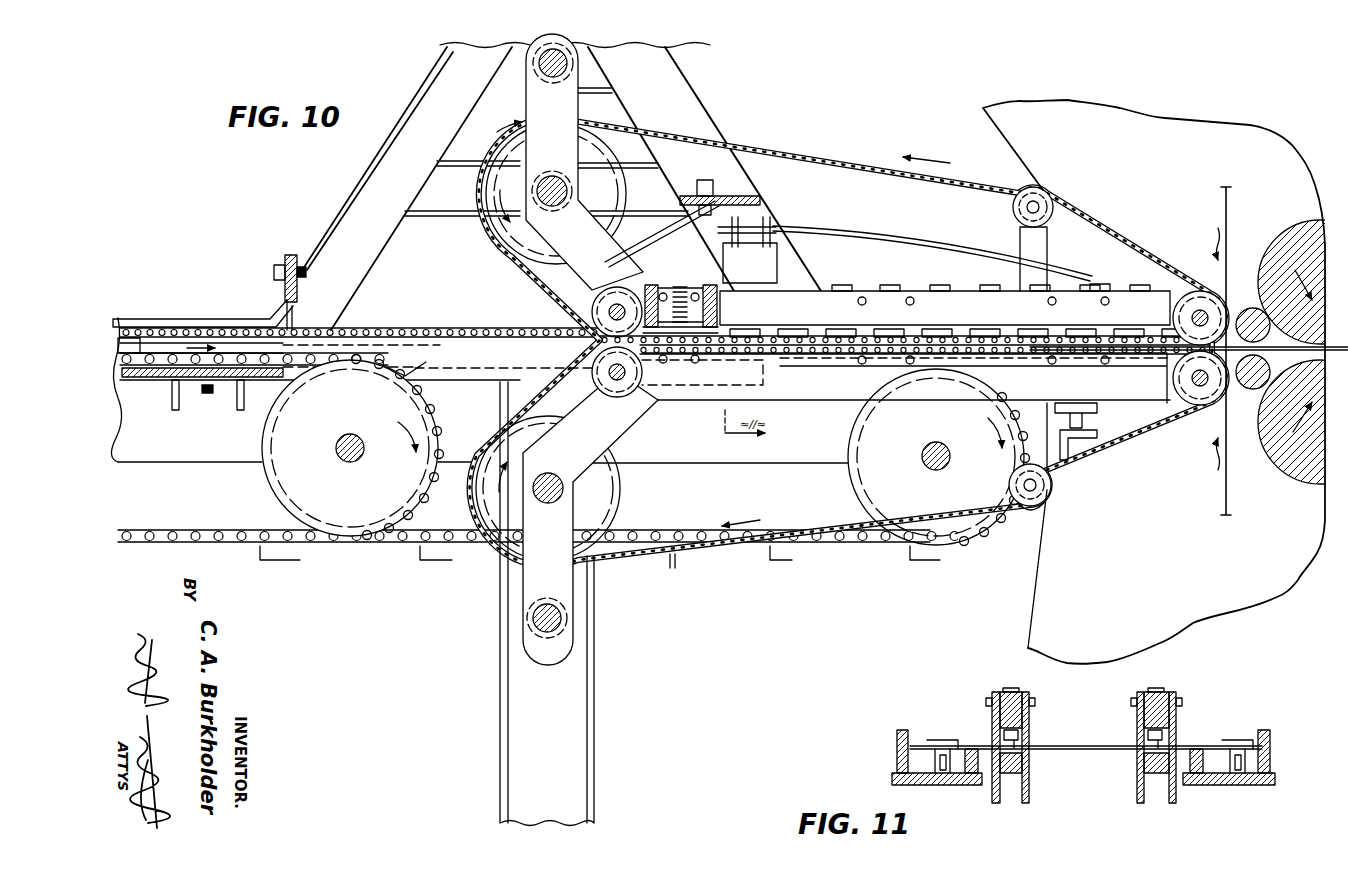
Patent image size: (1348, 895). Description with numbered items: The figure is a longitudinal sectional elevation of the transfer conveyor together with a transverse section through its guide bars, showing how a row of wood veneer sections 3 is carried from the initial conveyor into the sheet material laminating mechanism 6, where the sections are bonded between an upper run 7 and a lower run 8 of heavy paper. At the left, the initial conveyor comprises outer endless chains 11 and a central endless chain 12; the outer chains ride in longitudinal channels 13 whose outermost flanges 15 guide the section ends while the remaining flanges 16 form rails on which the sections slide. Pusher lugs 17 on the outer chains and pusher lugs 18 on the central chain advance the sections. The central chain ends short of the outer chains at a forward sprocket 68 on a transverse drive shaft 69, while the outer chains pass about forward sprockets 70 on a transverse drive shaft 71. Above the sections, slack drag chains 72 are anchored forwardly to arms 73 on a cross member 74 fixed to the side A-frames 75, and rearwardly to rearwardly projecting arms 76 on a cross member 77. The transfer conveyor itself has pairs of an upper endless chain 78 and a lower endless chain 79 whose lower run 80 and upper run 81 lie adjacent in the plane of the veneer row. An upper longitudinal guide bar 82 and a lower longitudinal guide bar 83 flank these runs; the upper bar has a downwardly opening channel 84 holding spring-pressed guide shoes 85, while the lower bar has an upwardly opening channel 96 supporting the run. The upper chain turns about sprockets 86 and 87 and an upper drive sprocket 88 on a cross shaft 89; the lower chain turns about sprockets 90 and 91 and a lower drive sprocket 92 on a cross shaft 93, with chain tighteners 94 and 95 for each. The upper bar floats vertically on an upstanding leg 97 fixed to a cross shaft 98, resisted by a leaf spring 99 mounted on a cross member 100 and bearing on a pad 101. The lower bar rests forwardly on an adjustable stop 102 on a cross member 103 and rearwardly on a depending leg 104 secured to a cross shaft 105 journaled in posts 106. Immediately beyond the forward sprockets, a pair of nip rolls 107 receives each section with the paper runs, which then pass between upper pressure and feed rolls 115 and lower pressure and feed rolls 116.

In FIG. 11, the wood veneer sections 3 is at (1075, 747).
In FIG. 10, the sheet material laminating mechanism 6 is at (995, 134).
In FIG. 10, the upper run 7 is at (1230, 198).
In FIG. 10, the lower run 8 is at (1222, 487).
In FIG. 10, the outer endless chains 11 is at (795, 546).
In FIG. 11, the outer endless chains 11 is at (936, 745).
In FIG. 10, the central endless chain 12 is at (208, 368).
In FIG. 11, the longitudinal channels 13 is at (960, 786).
In FIG. 11, the outermost flanges 15 is at (900, 730).
In FIG. 11, the remaining flanges 16 is at (970, 749).
In FIG. 10, the pusher lugs 17 is at (285, 330).
In FIG. 10, the pusher lugs 18 is at (140, 325).
In FIG. 10, the forward sprocket 68 is at (346, 512).
In FIG. 10, the transverse drive shaft 69 is at (338, 449).
In FIG. 10, the forward sprockets 70 is at (872, 474).
In FIG. 10, the transverse drive shaft 71 is at (925, 449).
In FIG. 10, the drag chains 72 is at (386, 328).
In FIG. 10, the arms 73 is at (640, 238).
In FIG. 10, the cross member 74 is at (760, 197).
In FIG. 10, the side A-frames 75 is at (700, 128).
In FIG. 10, the rearwardly projecting arms 76 is at (200, 320).
In FIG. 10, the cross member 77 is at (290, 255).
In FIG. 10, the upper endless chain 78 is at (840, 148).
In FIG. 10, the lower endless chain 79 is at (626, 563).
In FIG. 10, the lower run 80 is at (836, 330).
In FIG. 10, the upper run 81 is at (814, 352).
In FIG. 10, the upper longitudinal guide bar 82 is at (900, 300).
In FIG. 11, the upper longitudinal guide bar 82 is at (1003, 706).
In FIG. 10, the lower longitudinal guide bar 83 is at (822, 392).
In FIG. 11, the lower longitudinal guide bar 83 is at (996, 805).
In FIG. 11, the downwardly opening channel 84 is at (1143, 722).
In FIG. 10, the spring-pressed guide shoes 85 is at (758, 338).
In FIG. 10, the sprocket 86 is at (637, 294).
In FIG. 10, the sprocket 87 is at (1182, 300).
In FIG. 10, the upper drive sprocket 88 is at (497, 215).
In FIG. 10, the cross shaft 89 is at (552, 176).
In FIG. 10, the sprocket 90 is at (1200, 392).
In FIG. 10, the sprocket 91 is at (622, 386).
In FIG. 10, the lower drive sprocket 92 is at (607, 500).
In FIG. 10, the cross shaft 93 is at (551, 474).
In FIG. 10, the chain tightener 94 is at (1013, 210).
In FIG. 10, the chain tightener 95 is at (1010, 478).
In FIG. 11, the upwardly opening channel 96 is at (1143, 757).
In FIG. 10, the upstanding leg 97 is at (522, 125).
In FIG. 10, the cross shaft 98 is at (553, 78).
In FIG. 10, the leaf spring 99 is at (846, 230).
In FIG. 10, the cross member 100 is at (742, 228).
In FIG. 10, the pad 101 is at (1100, 288).
In FIG. 10, the adjustable stop 102 is at (1085, 420).
In FIG. 10, the cross member 103 is at (1097, 440).
In FIG. 10, the depending leg 104 is at (537, 572).
In FIG. 10, the cross shaft 105 is at (543, 622).
In FIG. 10, the posts 106 is at (597, 748).
In FIG. 10, the nip rolls 107 is at (1253, 308).
In FIG. 10, the upper pressure and feed rolls 115 is at (1300, 238).
In FIG. 10, the lower pressure and feed rolls 116 is at (1300, 468).